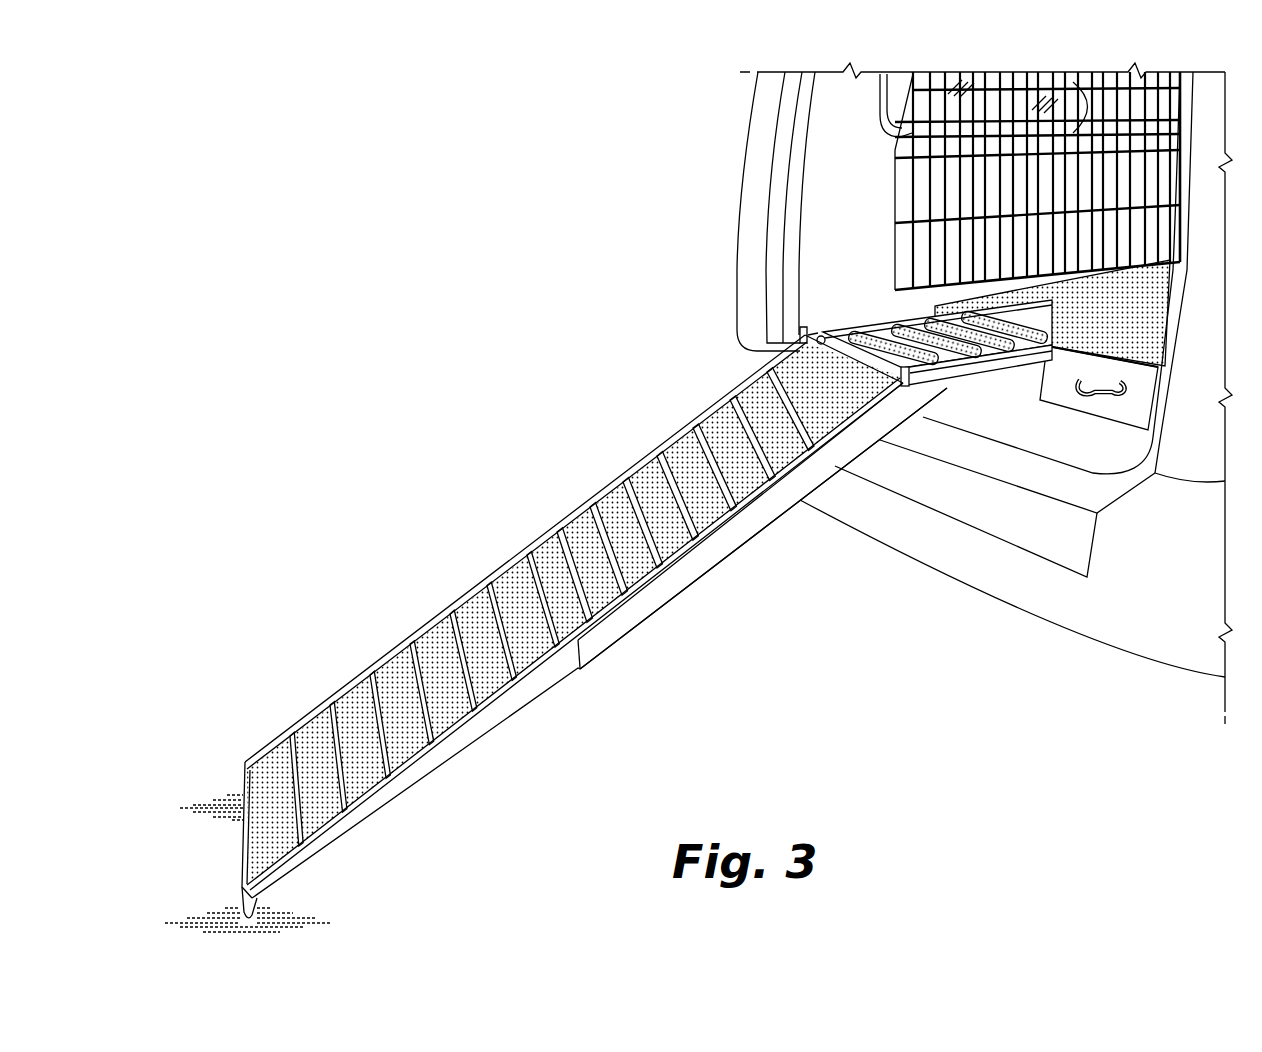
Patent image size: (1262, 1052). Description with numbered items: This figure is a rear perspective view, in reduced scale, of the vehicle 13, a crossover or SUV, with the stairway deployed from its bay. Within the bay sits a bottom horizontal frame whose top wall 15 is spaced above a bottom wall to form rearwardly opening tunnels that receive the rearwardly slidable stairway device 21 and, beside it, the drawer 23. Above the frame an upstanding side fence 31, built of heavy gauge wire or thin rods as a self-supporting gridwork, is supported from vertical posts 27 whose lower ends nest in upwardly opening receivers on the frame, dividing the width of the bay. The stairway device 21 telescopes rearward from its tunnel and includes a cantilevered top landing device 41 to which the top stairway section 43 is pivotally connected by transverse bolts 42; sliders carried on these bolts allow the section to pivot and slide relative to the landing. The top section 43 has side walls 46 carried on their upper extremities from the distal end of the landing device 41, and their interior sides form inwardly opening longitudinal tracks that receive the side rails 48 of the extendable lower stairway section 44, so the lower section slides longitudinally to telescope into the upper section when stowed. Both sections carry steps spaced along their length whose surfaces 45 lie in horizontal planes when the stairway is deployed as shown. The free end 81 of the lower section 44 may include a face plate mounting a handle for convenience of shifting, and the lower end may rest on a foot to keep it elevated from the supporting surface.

The vehicle 13 is at (988, 610).
The top wall 15 is at (1094, 325).
The stairway device 21 is at (628, 640).
The drawer 23 is at (1084, 421).
The vertical posts 27 is at (1000, 182).
The side fence 31 is at (886, 178).
The top landing device 41 is at (862, 322).
The transverse bolts 42 is at (824, 338).
The top stairway section 43 is at (673, 436).
The lower stairway section 44 is at (503, 730).
The step surfaces 45 is at (619, 535).
The side walls 46 is at (575, 512).
The side rails 48 is at (405, 646).
The free end 81 is at (240, 847).